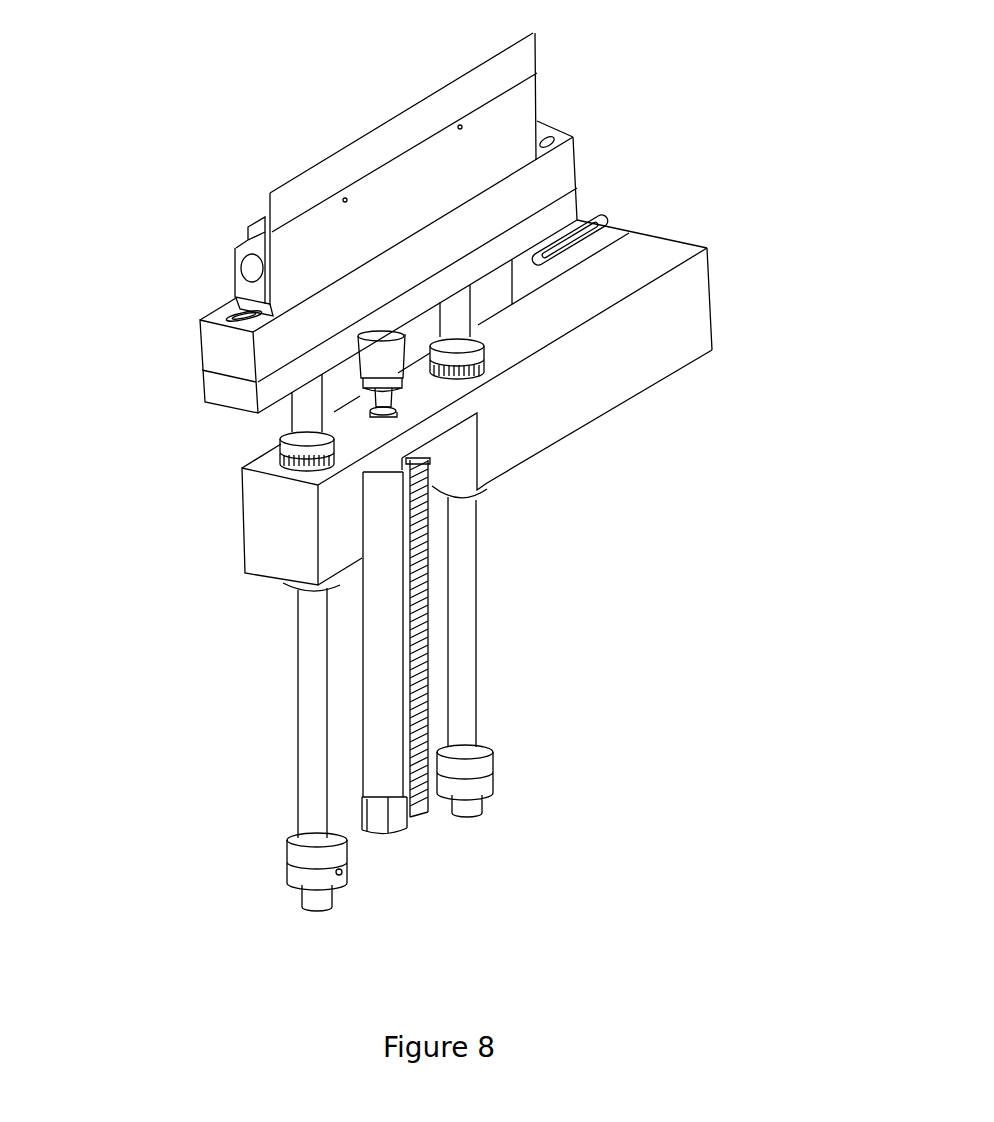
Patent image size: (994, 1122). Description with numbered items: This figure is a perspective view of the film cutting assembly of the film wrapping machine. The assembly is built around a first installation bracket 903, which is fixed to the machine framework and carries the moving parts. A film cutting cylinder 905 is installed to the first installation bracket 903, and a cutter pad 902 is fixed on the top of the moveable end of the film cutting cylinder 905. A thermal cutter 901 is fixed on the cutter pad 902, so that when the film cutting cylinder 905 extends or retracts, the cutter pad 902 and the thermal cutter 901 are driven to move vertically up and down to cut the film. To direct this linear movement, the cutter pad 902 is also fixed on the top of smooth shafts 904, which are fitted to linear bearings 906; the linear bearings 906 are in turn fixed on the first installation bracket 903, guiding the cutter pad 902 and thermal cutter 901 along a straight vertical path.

The thermal cutter 901 is at (497, 143).
The cutter pad 902 is at (542, 185).
The first installation bracket 903 is at (680, 341).
The smooth shafts 904 is at (460, 582).
The film cutting cylinder 905 is at (387, 698).
The linear bearings 906 is at (280, 448).